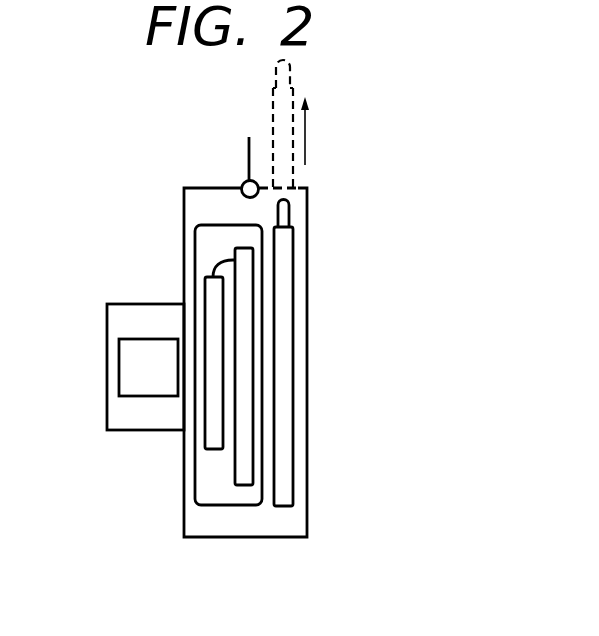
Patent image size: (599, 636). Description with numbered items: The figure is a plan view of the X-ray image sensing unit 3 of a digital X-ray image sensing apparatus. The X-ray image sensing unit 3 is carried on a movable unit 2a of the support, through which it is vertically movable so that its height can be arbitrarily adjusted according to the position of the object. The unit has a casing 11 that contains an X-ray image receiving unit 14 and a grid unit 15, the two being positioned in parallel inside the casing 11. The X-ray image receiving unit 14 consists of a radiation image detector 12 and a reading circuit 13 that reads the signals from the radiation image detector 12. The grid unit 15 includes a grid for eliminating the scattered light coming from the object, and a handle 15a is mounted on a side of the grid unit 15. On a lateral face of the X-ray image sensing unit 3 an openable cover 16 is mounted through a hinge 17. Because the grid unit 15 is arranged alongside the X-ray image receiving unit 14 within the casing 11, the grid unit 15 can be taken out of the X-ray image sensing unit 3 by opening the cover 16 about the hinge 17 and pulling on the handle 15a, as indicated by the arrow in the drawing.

The movable unit 2a is at (117, 323).
The X-ray image sensing unit 3 is at (338, 487).
The casing 11 is at (307, 290).
The radiation image detector 12 is at (245, 486).
The reading circuit 13 is at (212, 450).
The X-ray image receiving unit 14 is at (196, 464).
The grid unit 15 is at (285, 362).
The handle 15a is at (290, 210).
The openable cover 16 is at (249, 146).
The hinge 17 is at (243, 183).